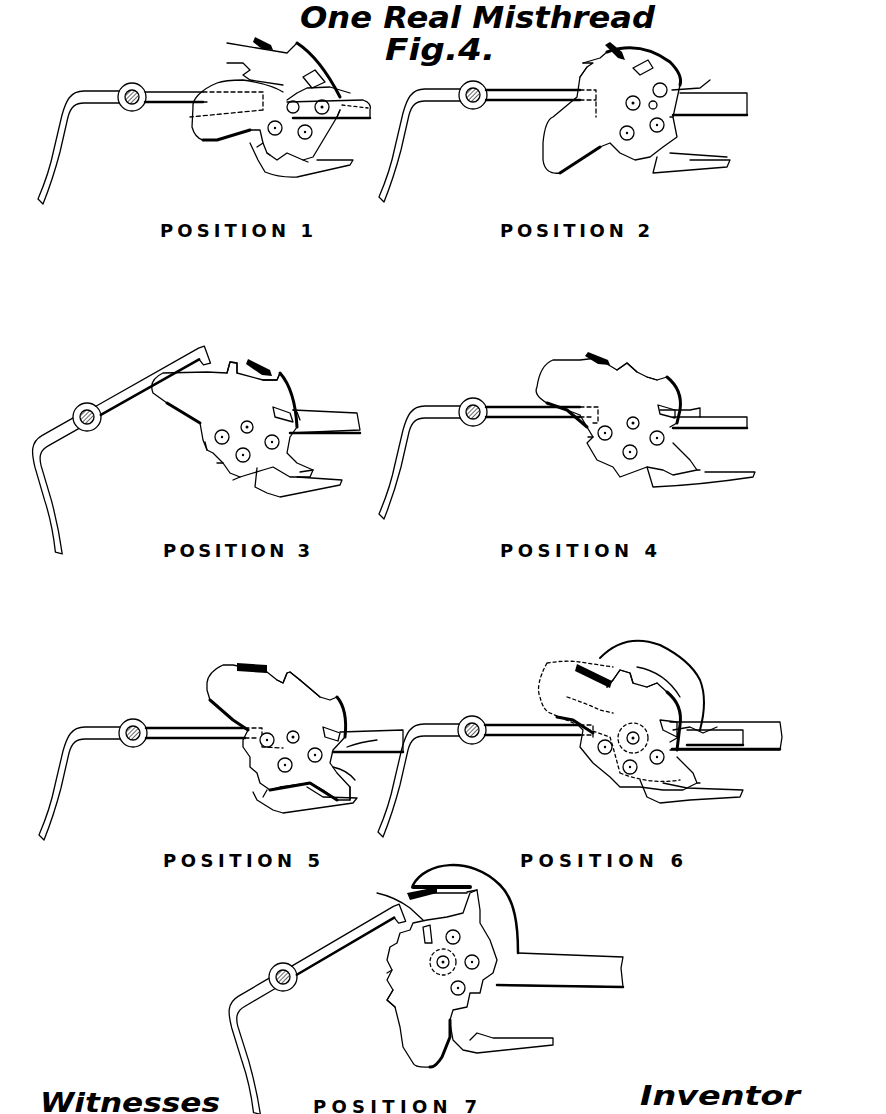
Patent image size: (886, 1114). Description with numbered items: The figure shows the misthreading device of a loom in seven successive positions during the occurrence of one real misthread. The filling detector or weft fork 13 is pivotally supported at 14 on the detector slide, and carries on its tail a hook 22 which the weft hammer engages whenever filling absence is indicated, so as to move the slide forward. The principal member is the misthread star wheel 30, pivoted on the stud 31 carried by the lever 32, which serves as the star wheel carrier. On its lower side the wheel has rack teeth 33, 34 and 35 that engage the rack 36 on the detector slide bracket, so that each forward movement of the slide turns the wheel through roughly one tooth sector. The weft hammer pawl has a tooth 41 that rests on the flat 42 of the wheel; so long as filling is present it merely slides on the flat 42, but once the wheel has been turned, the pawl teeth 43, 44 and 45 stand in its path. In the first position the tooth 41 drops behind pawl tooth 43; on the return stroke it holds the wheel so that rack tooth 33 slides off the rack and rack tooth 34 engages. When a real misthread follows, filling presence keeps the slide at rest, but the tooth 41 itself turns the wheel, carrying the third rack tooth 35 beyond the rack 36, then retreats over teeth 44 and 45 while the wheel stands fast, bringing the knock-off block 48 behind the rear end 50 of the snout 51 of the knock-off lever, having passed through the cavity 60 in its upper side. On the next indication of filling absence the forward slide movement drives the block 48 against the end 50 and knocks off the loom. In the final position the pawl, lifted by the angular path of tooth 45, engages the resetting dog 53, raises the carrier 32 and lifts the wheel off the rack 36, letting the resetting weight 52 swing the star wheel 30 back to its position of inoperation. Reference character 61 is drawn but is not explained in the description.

The filling detector or weft fork 13 is at (254, 1070).
The pivot of the weft fork 14 is at (284, 965).
The hook 22 is at (392, 925).
The misthread star wheel 30 is at (432, 993).
The stud 31 is at (448, 958).
The lever or star wheel carrier 32 is at (548, 958).
The first rack tooth 33 is at (460, 1003).
The second rack tooth 34 is at (487, 993).
The third rack tooth 35 is at (497, 972).
The rack 36 is at (470, 1040).
The tooth of the weft hammer pawl 41 is at (410, 893).
The flat 42 is at (392, 898).
The first pawl tooth 43 is at (390, 945).
The second pawl tooth 44 is at (387, 975).
The third pawl tooth 45 is at (390, 997).
The knock-off block 48 is at (428, 927).
The rear end of the snout 50 is at (710, 730).
The snout 51 is at (732, 748).
The extension or resetting weight 52 is at (410, 1037).
The resetting dog 53 is at (460, 878).
The cavity 60 is at (390, 731).
The bar edge 61 is at (473, 903).